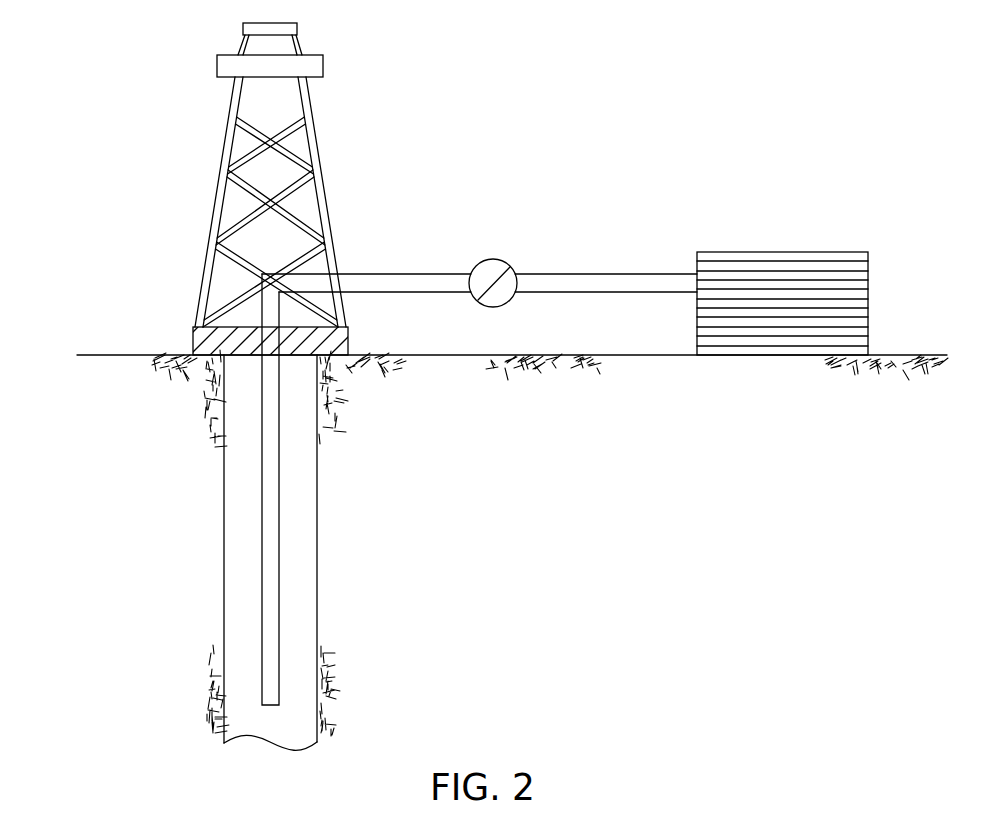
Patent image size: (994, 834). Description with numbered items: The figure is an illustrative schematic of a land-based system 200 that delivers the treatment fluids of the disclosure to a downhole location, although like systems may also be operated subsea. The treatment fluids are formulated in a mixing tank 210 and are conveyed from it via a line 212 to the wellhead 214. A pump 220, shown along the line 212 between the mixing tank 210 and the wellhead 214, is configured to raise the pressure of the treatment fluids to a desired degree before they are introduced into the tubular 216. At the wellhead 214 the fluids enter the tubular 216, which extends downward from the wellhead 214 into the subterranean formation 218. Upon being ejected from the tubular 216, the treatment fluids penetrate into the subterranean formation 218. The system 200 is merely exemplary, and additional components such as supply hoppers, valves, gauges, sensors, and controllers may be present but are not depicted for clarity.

The system 200 is at (140, 67).
The mixing tank 210 is at (740, 252).
The line 212 is at (385, 273).
The wellhead 214 is at (193, 342).
The tubular 216 is at (317, 550).
The subterranean formation 218 is at (115, 585).
The pump 220 is at (488, 259).